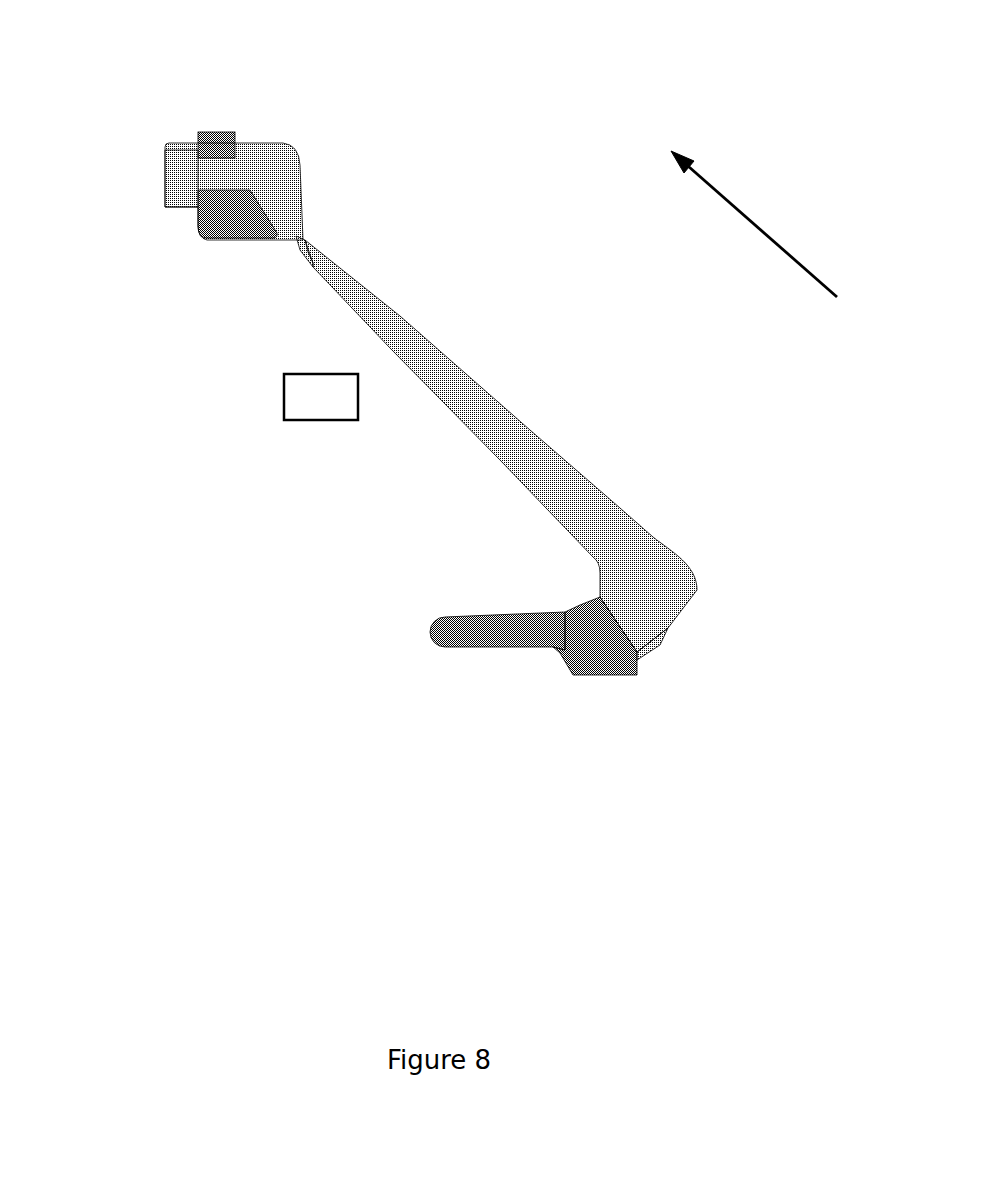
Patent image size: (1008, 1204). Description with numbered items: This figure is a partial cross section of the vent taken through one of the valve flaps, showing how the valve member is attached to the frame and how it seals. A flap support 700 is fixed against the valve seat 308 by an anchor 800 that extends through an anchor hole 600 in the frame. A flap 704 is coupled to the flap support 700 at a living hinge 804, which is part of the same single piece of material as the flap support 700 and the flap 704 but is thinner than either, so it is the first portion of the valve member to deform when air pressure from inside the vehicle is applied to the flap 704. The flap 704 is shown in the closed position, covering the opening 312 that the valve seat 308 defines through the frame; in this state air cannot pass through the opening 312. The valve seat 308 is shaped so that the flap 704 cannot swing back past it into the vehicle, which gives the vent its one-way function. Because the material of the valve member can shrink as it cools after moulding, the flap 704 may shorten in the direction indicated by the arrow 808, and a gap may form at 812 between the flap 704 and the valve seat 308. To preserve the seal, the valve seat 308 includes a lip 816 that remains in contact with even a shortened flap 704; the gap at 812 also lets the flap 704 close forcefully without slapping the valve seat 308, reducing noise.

The valve seat 308 is at (580, 609).
The opening 312 is at (321, 397).
The anchor hole 600 is at (212, 170).
The flap support 700 is at (297, 160).
The flap 704 is at (526, 433).
The anchor 800 is at (166, 171).
The living hinge 804 is at (303, 240).
The arrow 808 is at (753, 213).
The gap 812 is at (622, 652).
The lip 816 is at (597, 613).